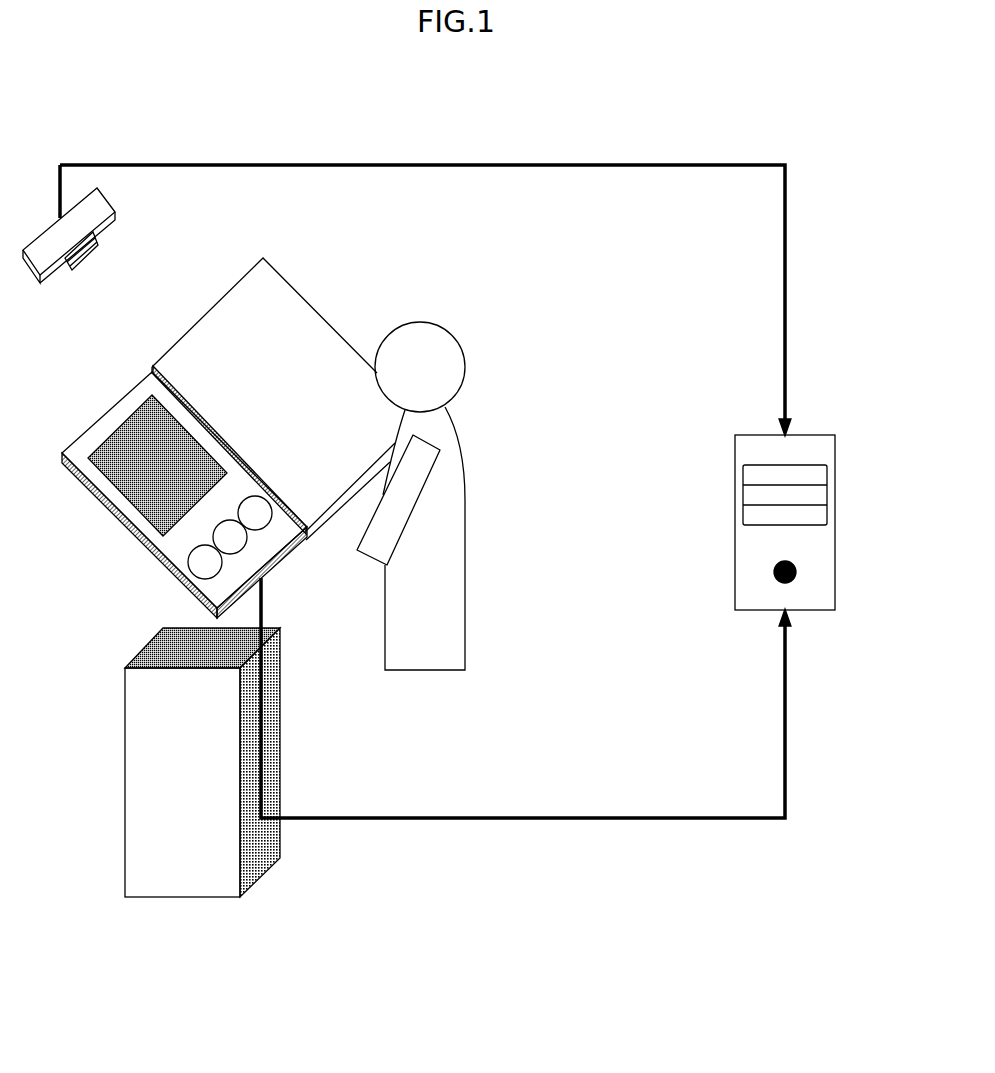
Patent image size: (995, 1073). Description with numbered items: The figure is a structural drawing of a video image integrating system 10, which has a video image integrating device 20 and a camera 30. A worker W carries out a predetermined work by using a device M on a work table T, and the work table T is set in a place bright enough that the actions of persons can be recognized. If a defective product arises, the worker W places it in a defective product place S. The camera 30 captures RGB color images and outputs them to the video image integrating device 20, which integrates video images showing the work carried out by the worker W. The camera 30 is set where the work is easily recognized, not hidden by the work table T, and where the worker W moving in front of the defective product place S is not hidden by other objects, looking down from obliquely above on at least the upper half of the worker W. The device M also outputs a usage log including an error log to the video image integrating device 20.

The video image integrating system 10 is at (457, 141).
The video image integrating device 20 is at (838, 548).
The camera 30 is at (113, 202).
The work table T is at (289, 283).
The device M is at (103, 416).
The worker W is at (466, 520).
The defective product place S is at (155, 640).